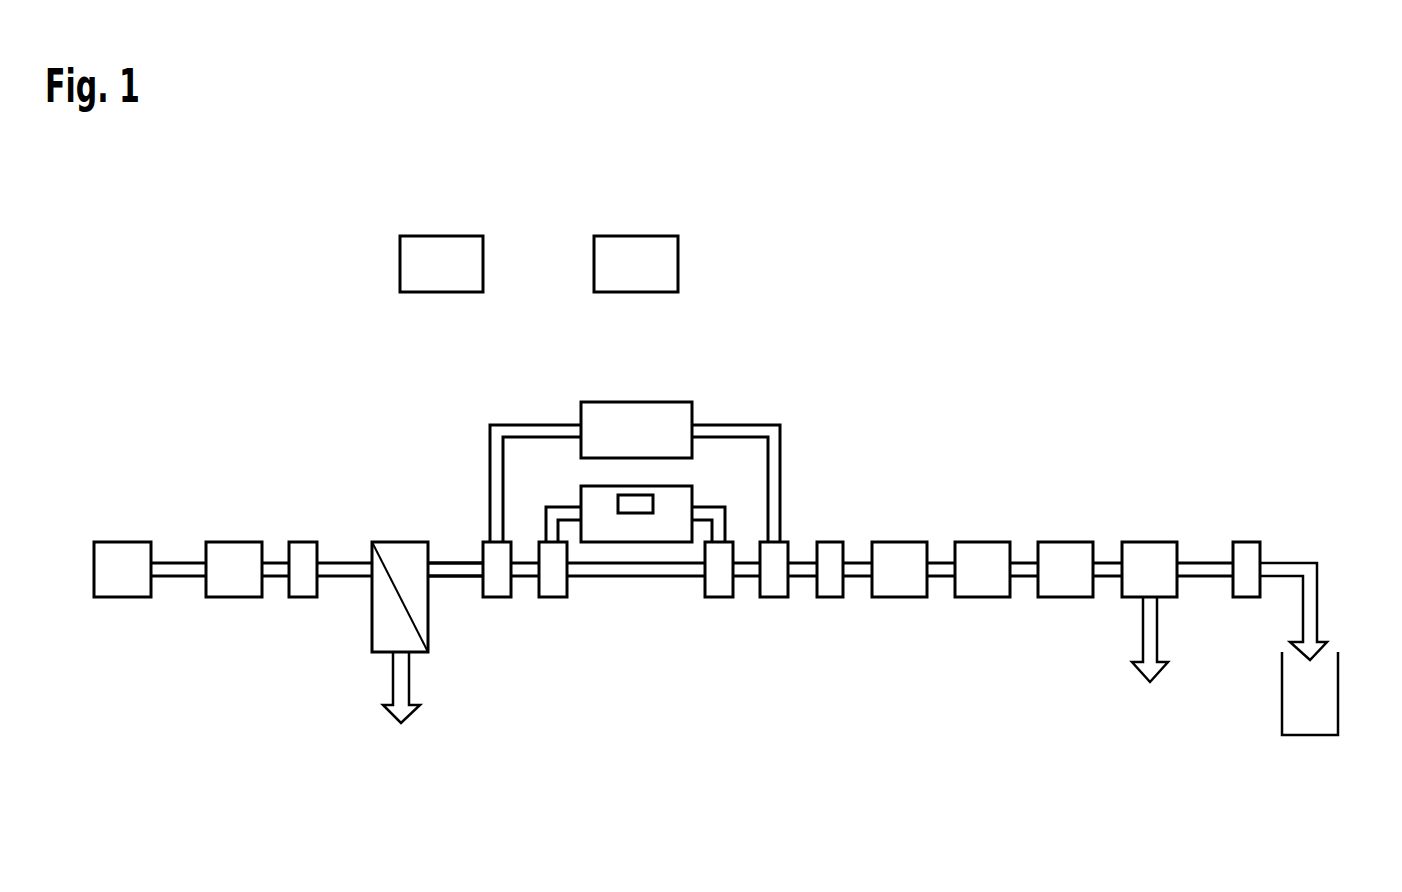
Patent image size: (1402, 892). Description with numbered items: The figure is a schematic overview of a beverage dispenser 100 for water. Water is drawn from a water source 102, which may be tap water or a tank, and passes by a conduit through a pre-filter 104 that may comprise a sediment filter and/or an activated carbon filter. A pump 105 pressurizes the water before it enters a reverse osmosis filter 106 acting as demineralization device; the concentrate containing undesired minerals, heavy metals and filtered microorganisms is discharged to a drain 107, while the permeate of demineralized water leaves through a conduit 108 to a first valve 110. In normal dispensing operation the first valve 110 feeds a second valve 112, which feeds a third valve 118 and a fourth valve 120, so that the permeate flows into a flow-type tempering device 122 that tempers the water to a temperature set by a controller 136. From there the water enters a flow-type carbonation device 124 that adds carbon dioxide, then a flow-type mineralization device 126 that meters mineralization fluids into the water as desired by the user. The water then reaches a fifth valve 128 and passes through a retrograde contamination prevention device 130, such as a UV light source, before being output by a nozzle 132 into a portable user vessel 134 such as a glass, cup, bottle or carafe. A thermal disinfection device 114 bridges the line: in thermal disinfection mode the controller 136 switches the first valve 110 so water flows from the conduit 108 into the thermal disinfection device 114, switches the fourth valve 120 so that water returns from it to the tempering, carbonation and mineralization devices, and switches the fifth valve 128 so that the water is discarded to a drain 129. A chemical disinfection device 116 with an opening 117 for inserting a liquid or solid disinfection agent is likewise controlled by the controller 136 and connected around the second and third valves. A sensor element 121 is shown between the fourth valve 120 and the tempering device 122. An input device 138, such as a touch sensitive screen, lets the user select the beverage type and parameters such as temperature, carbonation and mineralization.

The beverage dispenser 100 is at (1167, 308).
The water source 102 is at (120, 562).
The pre-filter 104 is at (230, 562).
The pump 105 is at (299, 562).
The reverse osmosis filter 106 is at (407, 534).
The drain 107 is at (393, 700).
The conduit 108 is at (448, 562).
The first valve 110 is at (495, 577).
The second valve 112 is at (550, 577).
The thermal disinfection device 114 is at (632, 423).
The chemical disinfection device 116 is at (612, 527).
The opening 117 is at (645, 507).
The third valve 118 is at (725, 577).
The fourth valve 120 is at (770, 577).
The sensor 121 is at (828, 562).
The flow-type tempering device 122 is at (897, 562).
The flow-type carbonation device 124 is at (980, 562).
The flow-type mineralization device 126 is at (1063, 562).
The fifth valve 128 is at (1147, 562).
The drain 129 is at (1143, 656).
The retrograde contamination prevention device 130 is at (1243, 562).
The nozzle 132 is at (1318, 603).
The portable user vessel 134 is at (1307, 713).
The controller 136 is at (665, 268).
The input device 138 is at (435, 268).